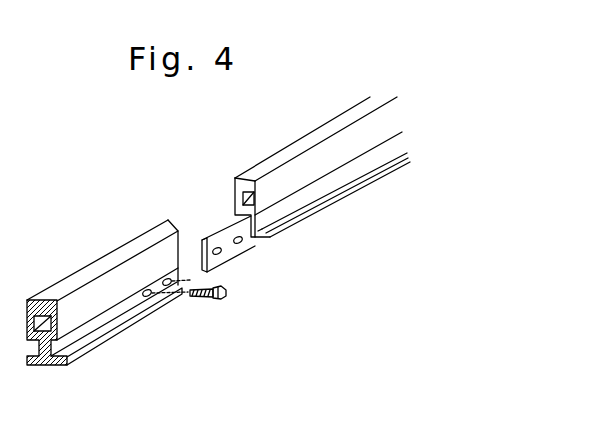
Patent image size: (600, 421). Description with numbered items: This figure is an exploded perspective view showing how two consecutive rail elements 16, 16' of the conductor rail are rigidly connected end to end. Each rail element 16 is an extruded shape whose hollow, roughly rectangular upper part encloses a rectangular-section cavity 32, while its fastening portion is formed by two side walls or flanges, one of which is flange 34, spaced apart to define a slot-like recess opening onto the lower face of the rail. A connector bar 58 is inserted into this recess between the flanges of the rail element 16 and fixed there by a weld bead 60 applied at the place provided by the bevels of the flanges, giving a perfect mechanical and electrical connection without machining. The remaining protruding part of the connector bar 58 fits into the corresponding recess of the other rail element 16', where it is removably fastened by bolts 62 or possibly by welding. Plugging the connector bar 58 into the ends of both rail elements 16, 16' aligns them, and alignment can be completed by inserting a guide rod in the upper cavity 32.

The rail element 16 is at (332, 152).
The rail element 16' is at (95, 273).
The cavity 32 is at (247, 188).
The flange 34 is at (350, 192).
The connector bar 58 is at (223, 255).
The weld bead 60 is at (253, 243).
The bolts 62 is at (201, 300).